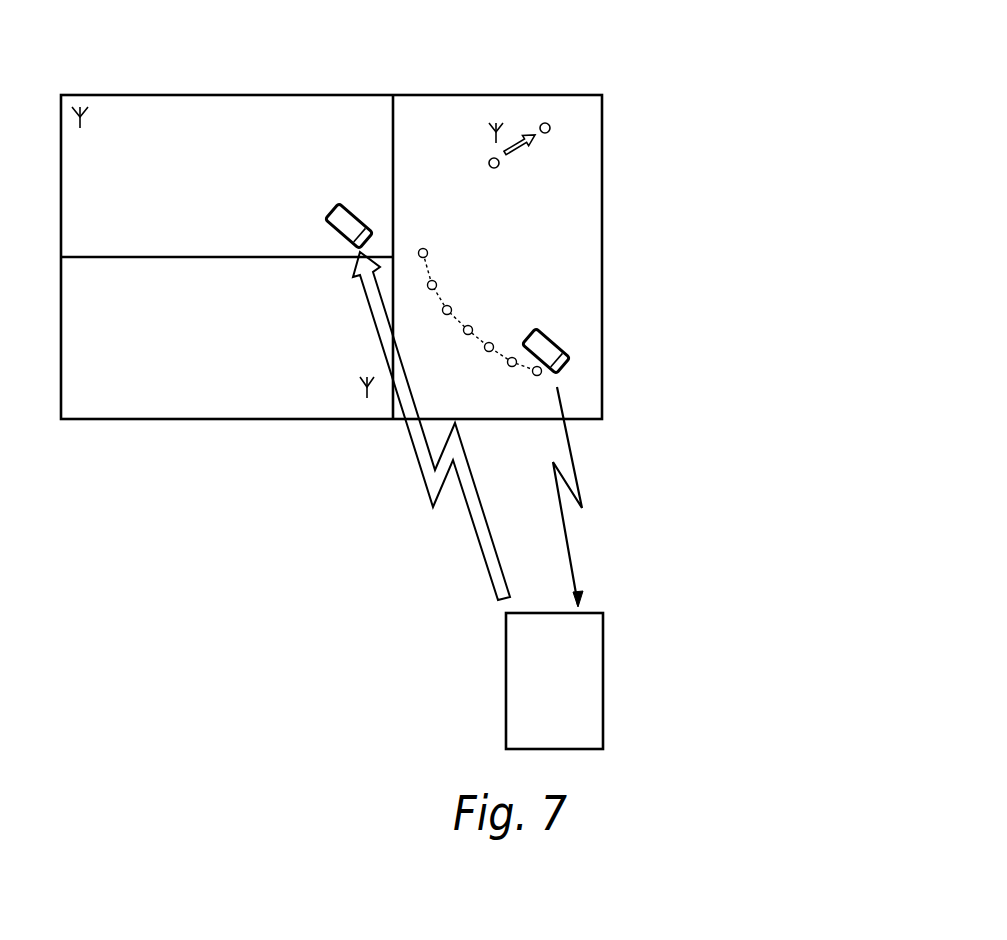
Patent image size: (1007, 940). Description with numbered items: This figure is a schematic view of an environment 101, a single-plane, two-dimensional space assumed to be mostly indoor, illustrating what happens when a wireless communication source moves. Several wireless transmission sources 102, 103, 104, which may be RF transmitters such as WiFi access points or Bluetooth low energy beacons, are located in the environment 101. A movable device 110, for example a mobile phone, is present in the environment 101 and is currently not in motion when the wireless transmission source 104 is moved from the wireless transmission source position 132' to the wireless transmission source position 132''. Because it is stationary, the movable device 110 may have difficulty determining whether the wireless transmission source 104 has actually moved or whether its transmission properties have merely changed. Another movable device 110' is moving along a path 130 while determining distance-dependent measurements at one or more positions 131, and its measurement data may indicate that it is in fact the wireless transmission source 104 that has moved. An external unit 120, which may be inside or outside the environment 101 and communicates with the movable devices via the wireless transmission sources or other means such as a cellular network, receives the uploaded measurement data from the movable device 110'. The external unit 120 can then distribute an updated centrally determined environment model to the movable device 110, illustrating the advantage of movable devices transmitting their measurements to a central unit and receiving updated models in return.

The environment 101 is at (155, 94).
The wireless transmission source 102 is at (83, 117).
The wireless transmission source 103 is at (365, 390).
The wireless transmission source 104 is at (488, 136).
The movable device 110 is at (336, 143).
The movable device 110' is at (593, 320).
The external unit 120 is at (604, 672).
The path 130 is at (480, 338).
The positions 131 is at (428, 253).
The wireless transmission source position 132' is at (524, 195).
The wireless transmission source position 132'' is at (615, 143).